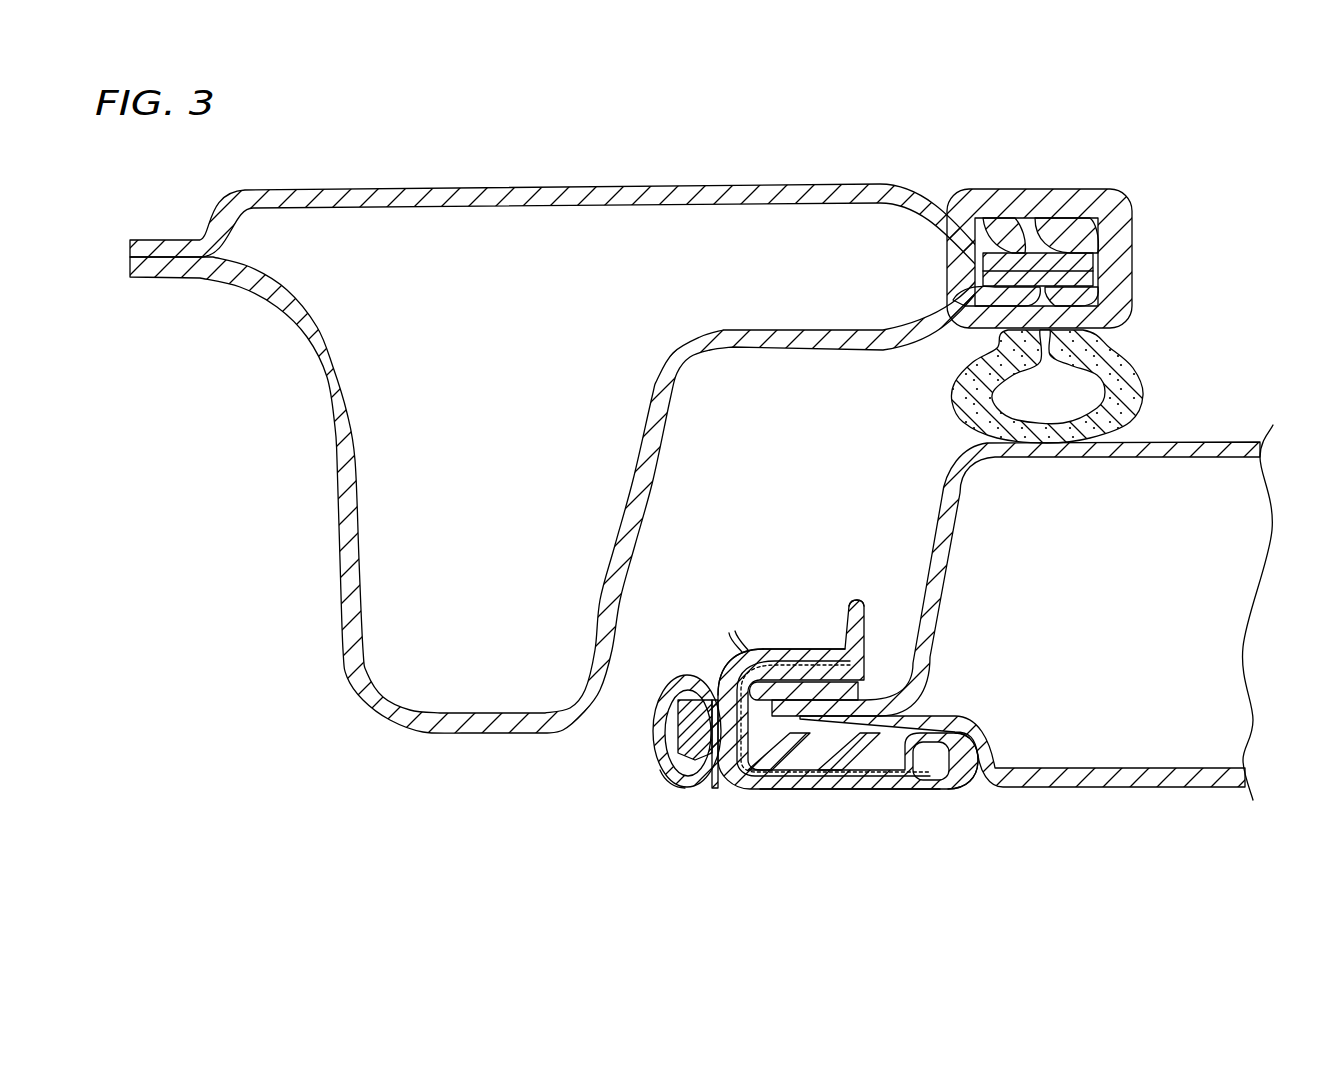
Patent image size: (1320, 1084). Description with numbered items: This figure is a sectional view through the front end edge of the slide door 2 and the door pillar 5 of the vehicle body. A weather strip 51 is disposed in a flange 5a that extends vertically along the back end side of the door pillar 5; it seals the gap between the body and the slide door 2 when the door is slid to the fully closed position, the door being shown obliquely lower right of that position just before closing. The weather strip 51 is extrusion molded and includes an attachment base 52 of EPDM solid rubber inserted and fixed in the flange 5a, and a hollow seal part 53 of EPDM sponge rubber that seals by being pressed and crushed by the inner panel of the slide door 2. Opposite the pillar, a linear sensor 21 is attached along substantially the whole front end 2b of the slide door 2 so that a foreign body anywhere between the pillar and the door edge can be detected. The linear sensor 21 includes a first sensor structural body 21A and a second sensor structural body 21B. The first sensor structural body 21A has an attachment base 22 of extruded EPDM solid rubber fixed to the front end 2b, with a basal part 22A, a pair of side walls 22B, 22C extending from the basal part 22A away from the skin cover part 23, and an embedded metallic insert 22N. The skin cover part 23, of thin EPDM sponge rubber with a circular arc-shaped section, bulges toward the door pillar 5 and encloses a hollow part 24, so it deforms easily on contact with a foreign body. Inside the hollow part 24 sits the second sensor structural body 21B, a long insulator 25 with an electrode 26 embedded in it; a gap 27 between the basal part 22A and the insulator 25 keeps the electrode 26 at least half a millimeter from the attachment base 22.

The slide door 2 is at (1012, 636).
The front end 2b is at (1022, 751).
The door pillar 5 is at (468, 734).
The flange 5a is at (1069, 252).
The linear sensor 21 is at (786, 706).
The first sensor structural body 21A is at (838, 754).
The second sensor structural body 21B is at (660, 770).
The attachment base 22 is at (848, 730).
The basal part 22A is at (781, 791).
The side wall 22B is at (797, 648).
The side wall 22C is at (860, 791).
The metallic insert 22N is at (846, 668).
The skin cover part 23 is at (703, 797).
The hollow part 24 is at (673, 796).
The insulator 25 is at (666, 702).
The electrode 26 is at (727, 790).
The gap 27 is at (735, 662).
The weather strip 51 is at (1096, 282).
The attachment base 52 is at (1007, 188).
The hollow seal part 53 is at (1142, 372).